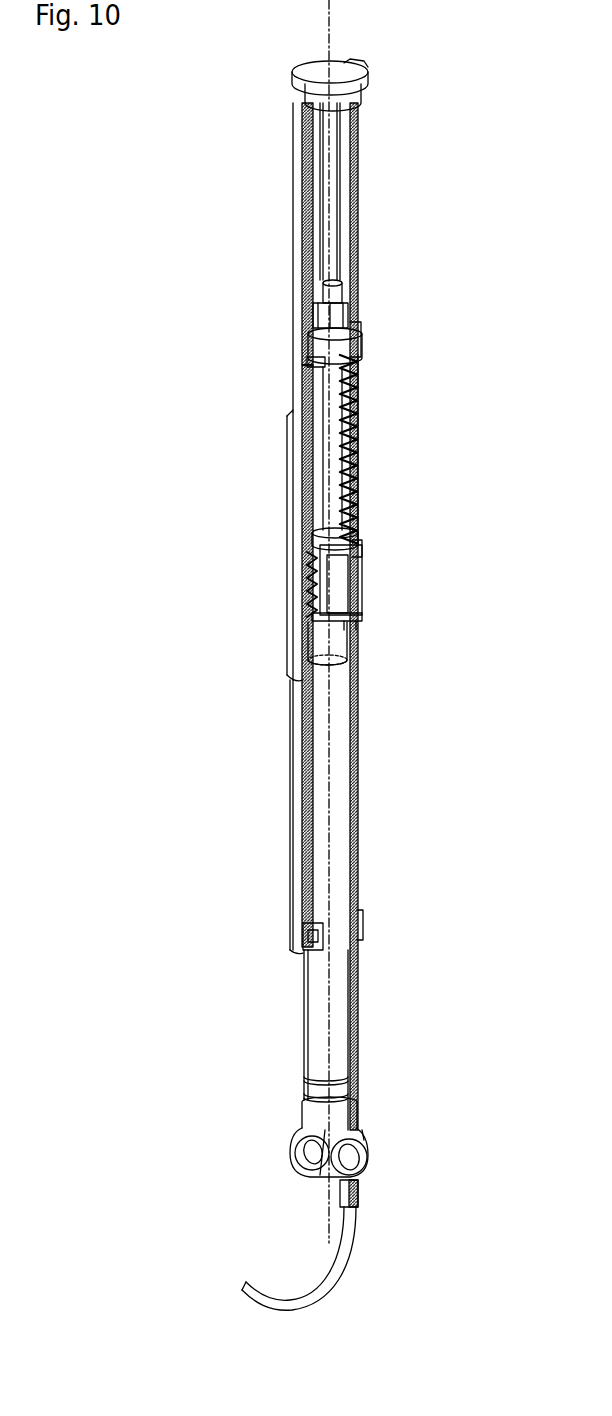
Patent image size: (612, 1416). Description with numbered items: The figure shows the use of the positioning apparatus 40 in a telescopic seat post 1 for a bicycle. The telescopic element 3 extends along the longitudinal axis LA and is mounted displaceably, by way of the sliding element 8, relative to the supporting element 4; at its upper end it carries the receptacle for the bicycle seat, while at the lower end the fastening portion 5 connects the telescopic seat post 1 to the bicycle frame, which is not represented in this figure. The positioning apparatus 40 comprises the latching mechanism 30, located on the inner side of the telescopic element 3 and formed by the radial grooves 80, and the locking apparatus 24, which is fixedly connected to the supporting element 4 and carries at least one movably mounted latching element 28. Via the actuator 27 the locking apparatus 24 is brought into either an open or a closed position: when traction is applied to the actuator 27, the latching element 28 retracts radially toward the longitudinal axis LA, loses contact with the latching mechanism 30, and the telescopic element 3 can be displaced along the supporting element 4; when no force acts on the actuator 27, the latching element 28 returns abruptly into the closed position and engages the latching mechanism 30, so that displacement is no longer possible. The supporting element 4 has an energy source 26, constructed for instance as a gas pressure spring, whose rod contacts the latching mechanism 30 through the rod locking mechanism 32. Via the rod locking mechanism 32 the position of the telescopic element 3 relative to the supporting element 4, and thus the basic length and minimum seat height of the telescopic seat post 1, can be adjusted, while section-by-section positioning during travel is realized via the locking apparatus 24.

The telescopic seat post 1 is at (118, 243).
The telescopic element 3 is at (300, 222).
The supporting element 4 is at (290, 1020).
The fastening portion 5 is at (300, 1155).
The sliding element 8 is at (295, 485).
The locking apparatus 24 is at (333, 577).
The energy source 26 is at (312, 780).
The actuator 27 is at (352, 620).
The latching element 28 is at (310, 588).
The latching mechanism 30 is at (358, 450).
The rod locking mechanism 32 is at (362, 343).
The positioning apparatus 40 is at (388, 578).
The radial grooves 80 is at (356, 380).
The longitudinal axis LA is at (338, 49).
The interior I is at (333, 503).